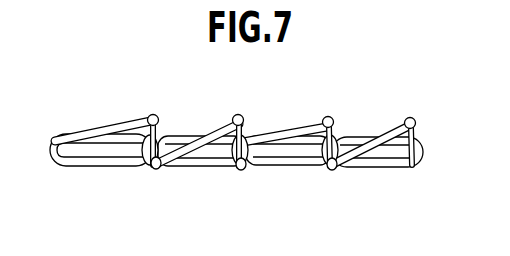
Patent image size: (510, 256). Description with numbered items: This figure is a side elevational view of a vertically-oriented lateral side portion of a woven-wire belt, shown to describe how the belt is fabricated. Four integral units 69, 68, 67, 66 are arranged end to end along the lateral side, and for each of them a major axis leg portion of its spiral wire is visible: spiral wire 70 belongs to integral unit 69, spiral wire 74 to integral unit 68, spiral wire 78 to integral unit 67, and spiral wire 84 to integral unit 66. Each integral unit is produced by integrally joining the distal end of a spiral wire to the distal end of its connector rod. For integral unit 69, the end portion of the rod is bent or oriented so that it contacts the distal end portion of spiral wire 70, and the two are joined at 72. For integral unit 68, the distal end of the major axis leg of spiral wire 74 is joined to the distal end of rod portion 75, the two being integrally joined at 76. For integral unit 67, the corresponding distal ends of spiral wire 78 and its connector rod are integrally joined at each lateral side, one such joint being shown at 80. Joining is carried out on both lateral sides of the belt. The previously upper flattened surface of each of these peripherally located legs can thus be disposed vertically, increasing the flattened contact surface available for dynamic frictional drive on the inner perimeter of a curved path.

The integral unit 66 is at (382, 166).
The integral unit 67 is at (295, 166).
The integral unit 68 is at (207, 167).
The integral unit 69 is at (118, 167).
The spiral wire 70 is at (113, 126).
The joint 72 is at (156, 116).
The spiral wire 74 is at (196, 136).
The portion of rod 75 is at (236, 170).
The joint 76 is at (241, 115).
The spiral wire 78 is at (285, 129).
The lateral side joint 80 is at (330, 117).
The spiral wire 84 is at (378, 137).